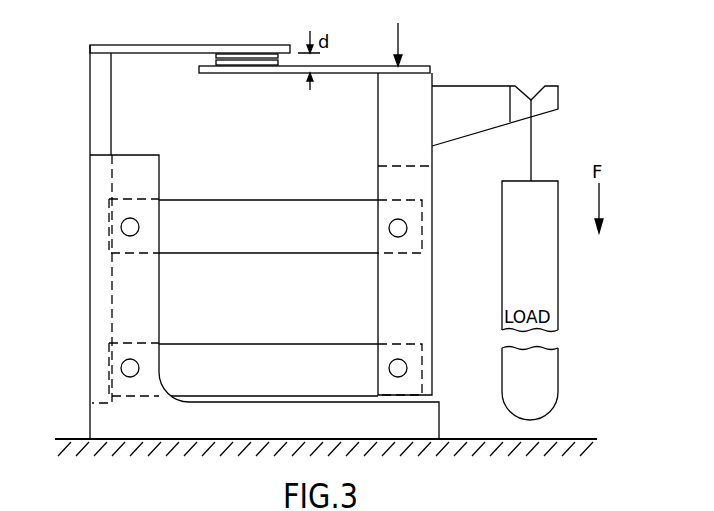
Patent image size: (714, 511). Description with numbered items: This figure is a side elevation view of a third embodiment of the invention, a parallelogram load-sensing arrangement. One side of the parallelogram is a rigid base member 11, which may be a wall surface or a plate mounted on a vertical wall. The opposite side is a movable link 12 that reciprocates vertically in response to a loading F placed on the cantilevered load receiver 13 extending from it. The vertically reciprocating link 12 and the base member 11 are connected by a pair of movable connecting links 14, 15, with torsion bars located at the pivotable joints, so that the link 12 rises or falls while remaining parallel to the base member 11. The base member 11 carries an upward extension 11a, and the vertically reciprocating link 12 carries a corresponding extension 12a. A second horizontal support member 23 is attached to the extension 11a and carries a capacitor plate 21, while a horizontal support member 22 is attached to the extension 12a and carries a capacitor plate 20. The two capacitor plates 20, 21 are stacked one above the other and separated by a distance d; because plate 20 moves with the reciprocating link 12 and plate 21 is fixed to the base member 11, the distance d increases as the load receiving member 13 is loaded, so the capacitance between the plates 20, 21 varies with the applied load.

The base member 11 is at (120, 181).
The extension of the base member 11a is at (111, 120).
The movable link 12 is at (428, 288).
The extension of the vertically reciprocating link 12a is at (378, 152).
The cantilevered load receiver 13 is at (494, 88).
The connecting link 14 is at (308, 254).
The connecting link 15 is at (212, 343).
The capacitor plate 20 is at (244, 66).
The capacitor plate 21 is at (250, 54).
The horizontal support member 22 is at (362, 66).
The second horizontal support member 23 is at (157, 45).